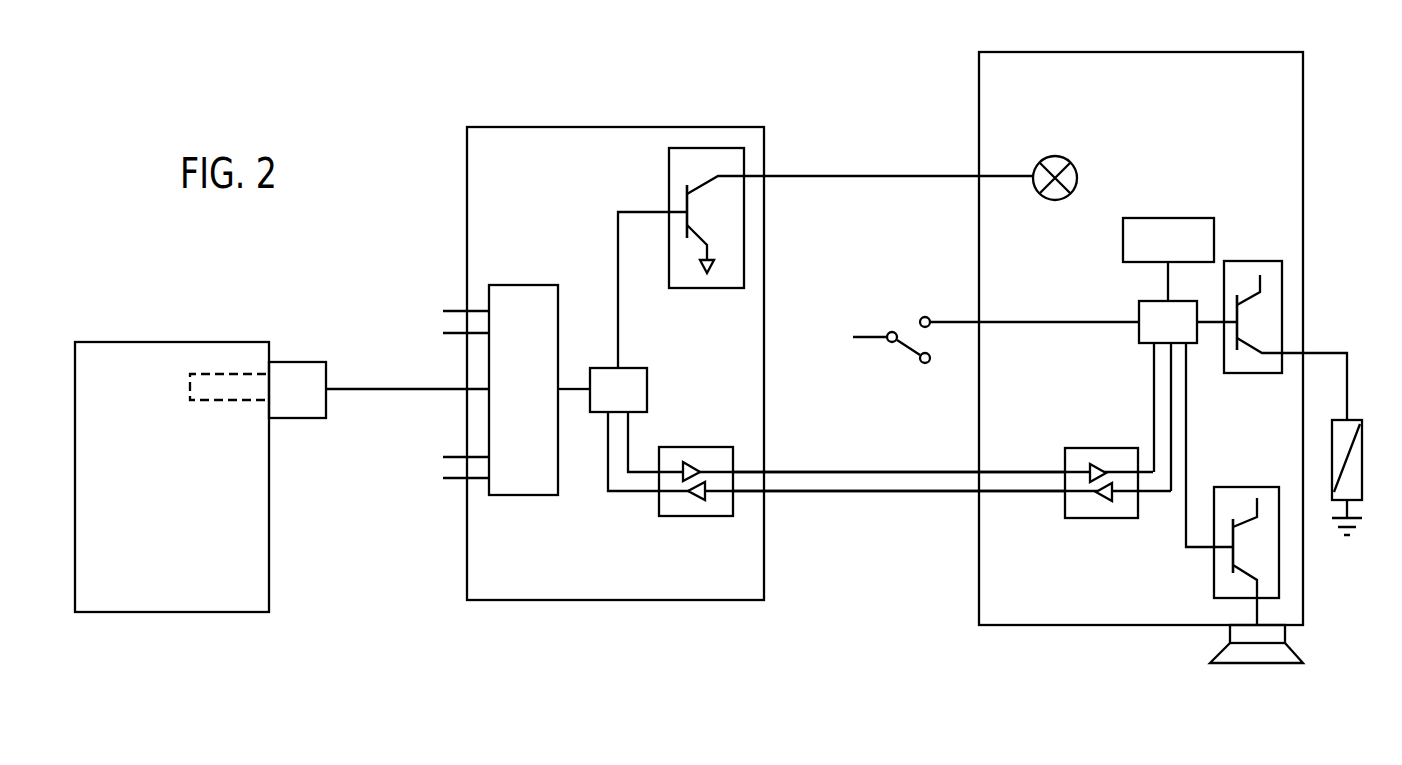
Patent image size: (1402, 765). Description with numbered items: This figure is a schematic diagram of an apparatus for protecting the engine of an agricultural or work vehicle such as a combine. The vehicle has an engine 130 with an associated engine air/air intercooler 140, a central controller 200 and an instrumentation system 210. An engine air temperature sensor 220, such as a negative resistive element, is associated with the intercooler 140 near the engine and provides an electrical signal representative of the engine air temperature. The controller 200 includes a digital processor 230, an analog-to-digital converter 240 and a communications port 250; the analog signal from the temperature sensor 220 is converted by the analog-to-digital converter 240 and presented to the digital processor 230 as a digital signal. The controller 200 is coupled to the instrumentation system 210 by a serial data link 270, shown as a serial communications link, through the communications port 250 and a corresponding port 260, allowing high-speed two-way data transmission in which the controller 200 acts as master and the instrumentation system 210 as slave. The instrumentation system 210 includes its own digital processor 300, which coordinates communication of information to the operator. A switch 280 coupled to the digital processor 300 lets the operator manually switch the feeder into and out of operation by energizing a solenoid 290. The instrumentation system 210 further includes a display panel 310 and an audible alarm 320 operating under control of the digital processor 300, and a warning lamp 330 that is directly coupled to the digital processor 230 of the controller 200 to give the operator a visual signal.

The engine 130 is at (132, 612).
The engine air/air intercooler 140 is at (207, 373).
The central controller 200 is at (715, 125).
The instrumentation system 210 is at (1223, 52).
The engine air temperature sensor 220 is at (287, 362).
The digital processor 230 is at (647, 383).
The analog-to-digital converter 240 is at (526, 495).
The communications port 250 is at (675, 516).
The transceiver 260 is at (1112, 448).
The serial data link 270 is at (872, 493).
The switch 280 is at (903, 308).
The solenoid 290 is at (1360, 430).
The digital processor 300 is at (1139, 336).
The display panel 310 is at (1170, 218).
The audible alarm 320 is at (1293, 652).
The warning lamp 330 is at (1076, 169).